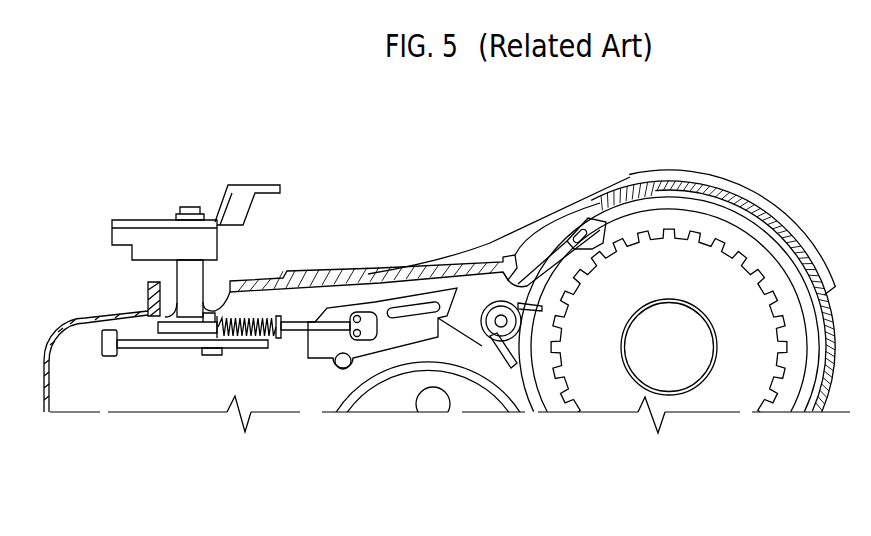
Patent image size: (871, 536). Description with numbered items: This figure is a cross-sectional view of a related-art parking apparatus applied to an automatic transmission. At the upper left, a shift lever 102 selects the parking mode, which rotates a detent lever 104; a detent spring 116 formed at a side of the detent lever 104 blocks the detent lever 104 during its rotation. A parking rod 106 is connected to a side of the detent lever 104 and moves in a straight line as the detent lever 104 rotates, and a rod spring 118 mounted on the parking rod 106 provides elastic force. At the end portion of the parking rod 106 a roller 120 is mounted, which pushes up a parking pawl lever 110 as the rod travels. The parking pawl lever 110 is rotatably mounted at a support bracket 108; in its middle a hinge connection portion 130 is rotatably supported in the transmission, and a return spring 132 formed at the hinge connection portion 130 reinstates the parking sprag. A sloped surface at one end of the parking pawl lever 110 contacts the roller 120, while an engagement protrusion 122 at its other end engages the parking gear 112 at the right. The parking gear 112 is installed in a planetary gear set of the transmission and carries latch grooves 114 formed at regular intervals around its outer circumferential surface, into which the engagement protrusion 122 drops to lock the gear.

The shift lever 102 is at (157, 237).
The detent lever 104 is at (163, 345).
The parking rod 106 is at (312, 345).
The support bracket 108 is at (384, 355).
The parking pawl lever 110 is at (483, 287).
The parking gear 112 is at (693, 257).
The latch grooves 114 is at (655, 233).
The detent spring 116 is at (107, 352).
The rod spring 118 is at (251, 343).
The roller 120 is at (357, 315).
The engagement protrusion 122 is at (610, 208).
The hinge connection portion 130 is at (512, 338).
The return spring 132 is at (496, 348).